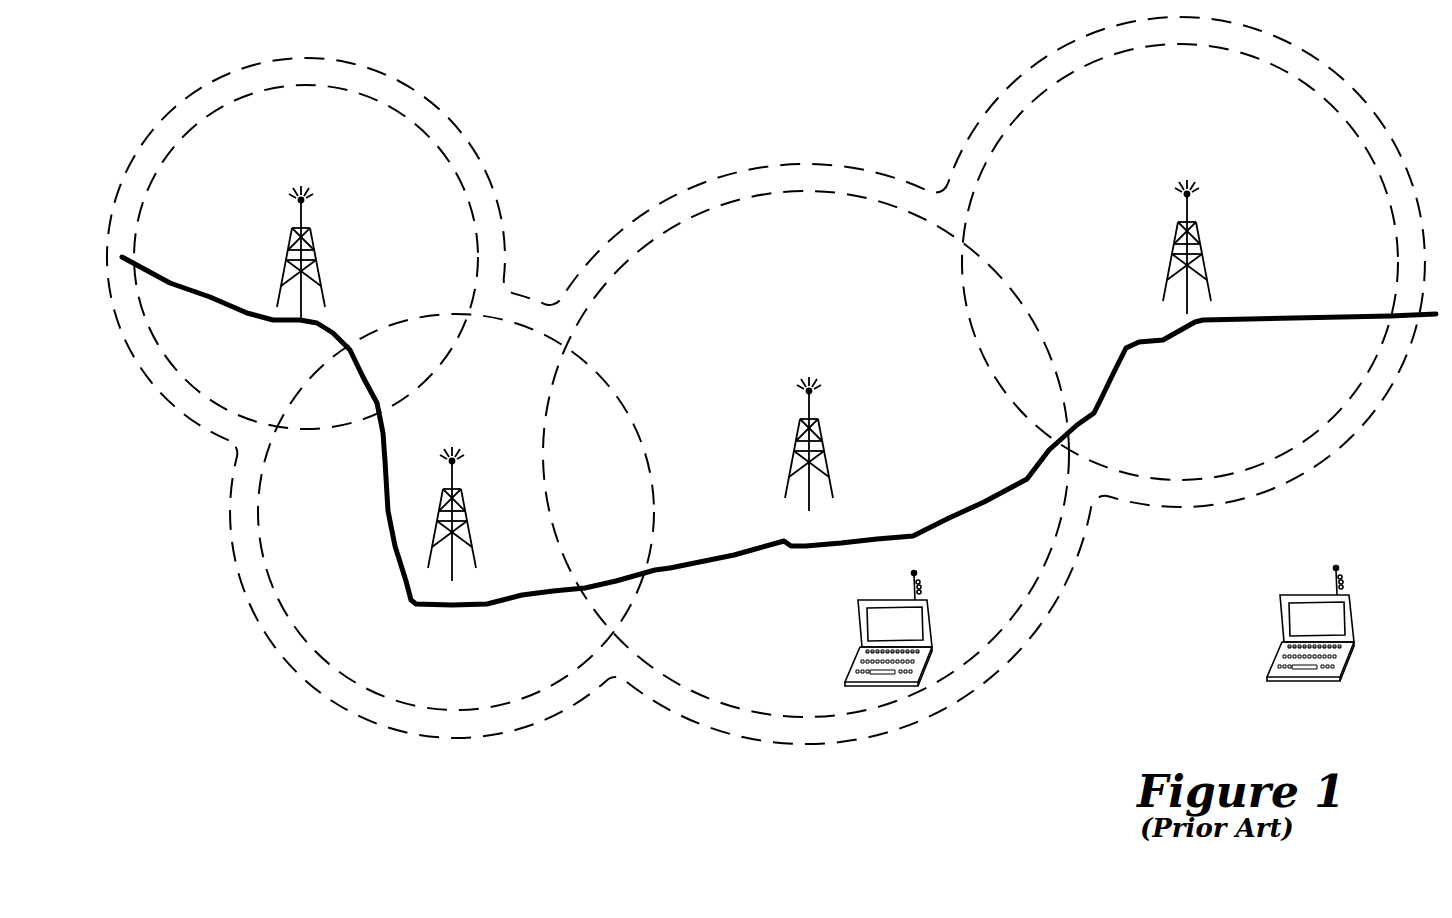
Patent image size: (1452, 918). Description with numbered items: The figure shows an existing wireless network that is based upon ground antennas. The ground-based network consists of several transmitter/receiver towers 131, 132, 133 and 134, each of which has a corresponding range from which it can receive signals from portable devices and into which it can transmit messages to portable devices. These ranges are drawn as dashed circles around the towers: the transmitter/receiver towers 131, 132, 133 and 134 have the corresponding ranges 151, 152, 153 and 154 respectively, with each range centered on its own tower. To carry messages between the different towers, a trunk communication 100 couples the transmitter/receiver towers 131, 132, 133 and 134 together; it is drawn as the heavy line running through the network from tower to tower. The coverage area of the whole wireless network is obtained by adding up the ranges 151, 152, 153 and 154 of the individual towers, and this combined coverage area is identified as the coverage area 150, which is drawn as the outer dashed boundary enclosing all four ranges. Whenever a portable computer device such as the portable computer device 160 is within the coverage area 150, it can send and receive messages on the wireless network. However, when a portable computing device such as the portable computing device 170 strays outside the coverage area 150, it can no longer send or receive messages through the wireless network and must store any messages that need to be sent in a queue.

The trunk communication 100 is at (1436, 320).
The transmitter/receiver tower 131 is at (319, 253).
The transmitter/receiver tower 132 is at (468, 514).
The transmitter/receiver tower 133 is at (827, 444).
The transmitter/receiver tower 134 is at (1207, 247).
The coverage area 150 is at (452, 122).
The range 151 is at (218, 108).
The range 152 is at (502, 323).
The range 153 is at (924, 218).
The range 154 is at (1276, 69).
The portable computer device 160 is at (849, 630).
The portable computing device 170 is at (1274, 621).